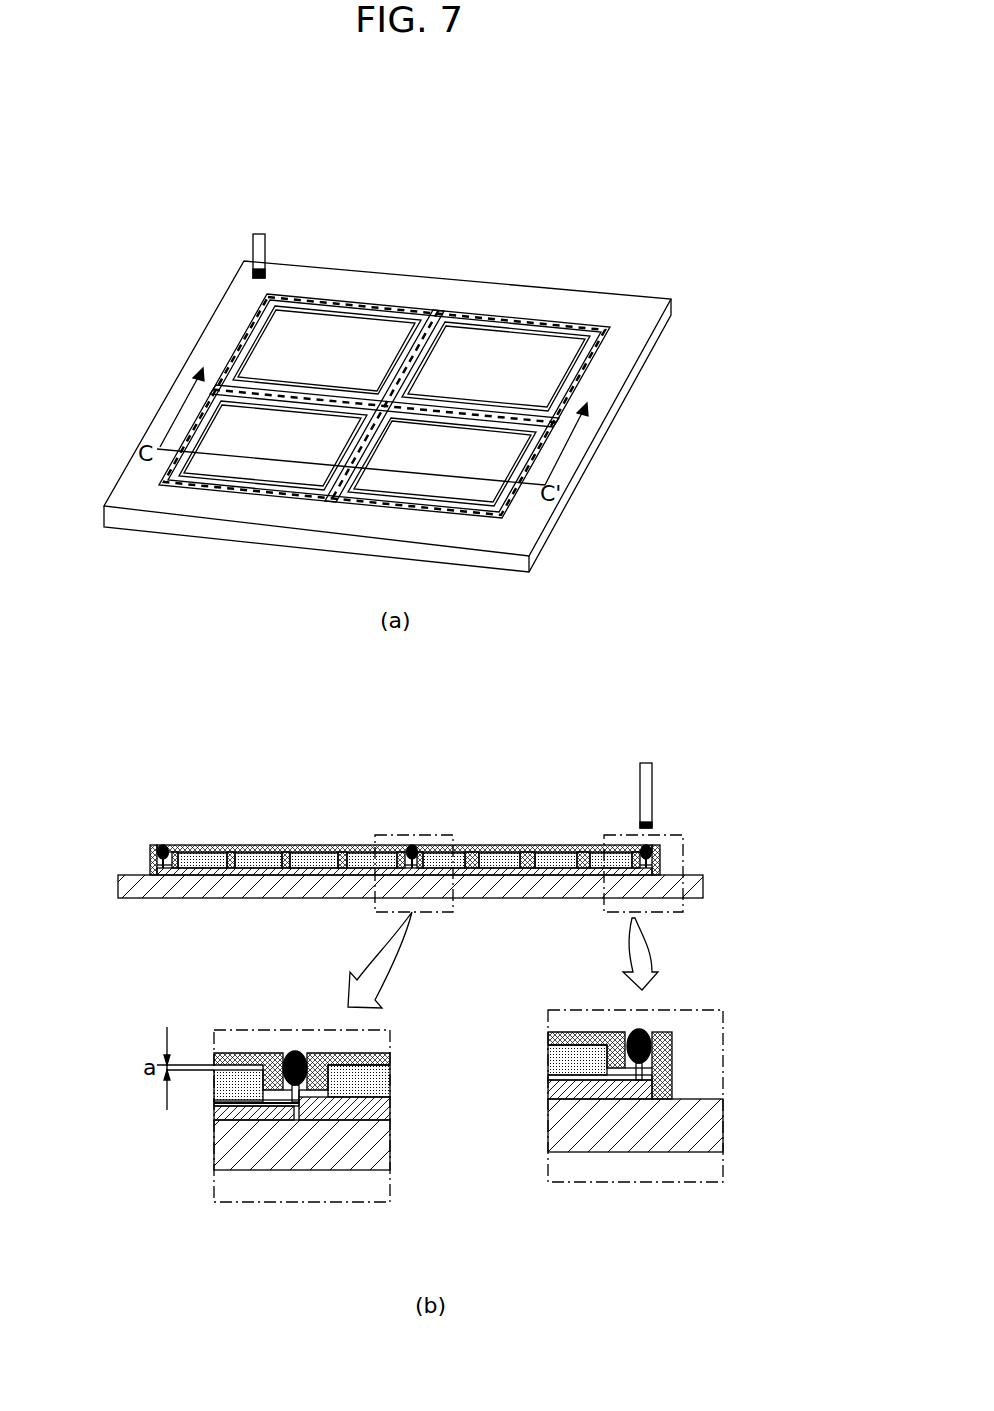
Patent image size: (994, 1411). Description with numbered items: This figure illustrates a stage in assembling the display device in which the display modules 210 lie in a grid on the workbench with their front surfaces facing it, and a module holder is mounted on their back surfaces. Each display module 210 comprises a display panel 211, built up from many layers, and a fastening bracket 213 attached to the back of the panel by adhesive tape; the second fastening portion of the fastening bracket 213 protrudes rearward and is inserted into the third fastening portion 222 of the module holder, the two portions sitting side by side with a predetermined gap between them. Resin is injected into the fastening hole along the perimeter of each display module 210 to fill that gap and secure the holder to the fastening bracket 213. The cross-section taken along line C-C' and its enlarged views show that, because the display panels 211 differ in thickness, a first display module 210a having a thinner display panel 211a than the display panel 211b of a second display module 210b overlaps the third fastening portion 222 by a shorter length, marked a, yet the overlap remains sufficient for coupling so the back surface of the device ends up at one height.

The display module 210 is at (502, 345).
The first display module 210a is at (228, 1051).
The second display module 210b is at (392, 1051).
The display panel 211 is at (568, 1087).
The first substrate 211a is at (270, 1115).
The second substrate 211b is at (338, 1113).
The fastening bracket 213 is at (253, 858).
The third fastening portion 222 is at (647, 1067).